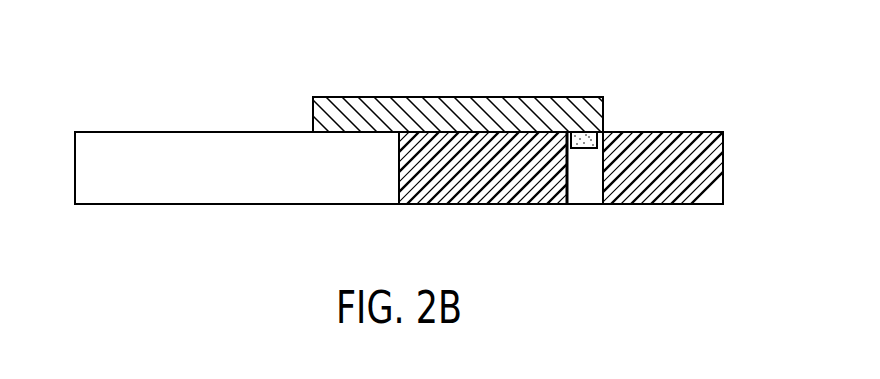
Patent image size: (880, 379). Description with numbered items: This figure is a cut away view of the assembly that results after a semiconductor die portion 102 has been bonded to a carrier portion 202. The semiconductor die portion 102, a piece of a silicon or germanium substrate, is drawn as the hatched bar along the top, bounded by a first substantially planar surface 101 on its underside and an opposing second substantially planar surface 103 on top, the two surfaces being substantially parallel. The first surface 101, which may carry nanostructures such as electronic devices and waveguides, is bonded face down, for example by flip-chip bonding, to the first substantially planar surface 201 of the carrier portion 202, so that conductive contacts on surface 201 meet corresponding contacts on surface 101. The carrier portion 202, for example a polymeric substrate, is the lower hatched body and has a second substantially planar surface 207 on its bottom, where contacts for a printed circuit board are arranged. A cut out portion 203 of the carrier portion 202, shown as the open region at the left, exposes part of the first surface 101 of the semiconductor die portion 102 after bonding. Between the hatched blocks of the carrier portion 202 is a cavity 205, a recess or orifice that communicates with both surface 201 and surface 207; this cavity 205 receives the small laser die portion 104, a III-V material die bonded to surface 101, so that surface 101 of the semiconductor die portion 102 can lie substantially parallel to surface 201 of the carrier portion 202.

The first substantially planar surface 101 is at (493, 135).
The semiconductor die portion 102 is at (413, 96).
The second substantially planar surface 103 is at (542, 92).
The laser die portion 104 is at (605, 129).
The first substantially planar surface of carrier portion 201 is at (540, 127).
The carrier portion 202 is at (703, 192).
The cut out portion 203 is at (222, 137).
The cavity 205 is at (590, 182).
The second substantially planar surface of carrier portion 207 is at (665, 206).